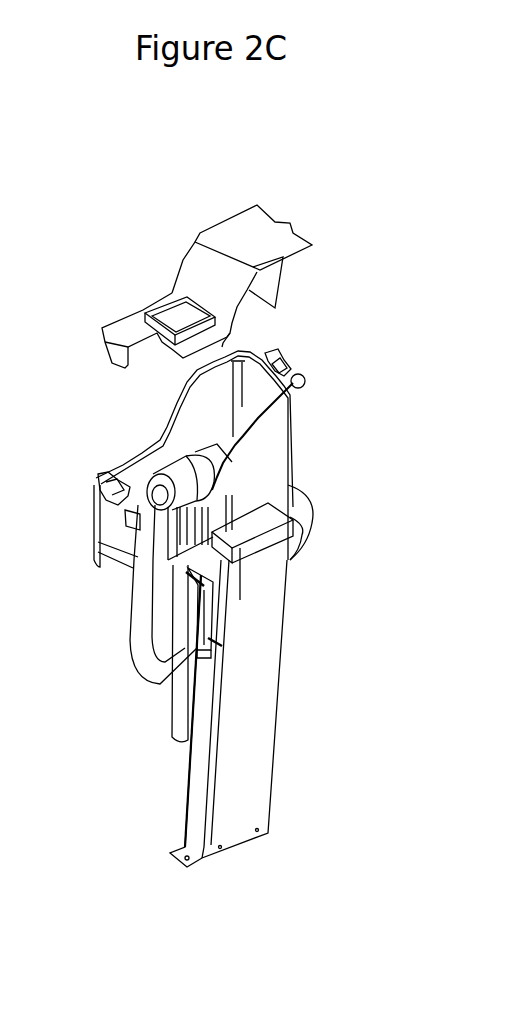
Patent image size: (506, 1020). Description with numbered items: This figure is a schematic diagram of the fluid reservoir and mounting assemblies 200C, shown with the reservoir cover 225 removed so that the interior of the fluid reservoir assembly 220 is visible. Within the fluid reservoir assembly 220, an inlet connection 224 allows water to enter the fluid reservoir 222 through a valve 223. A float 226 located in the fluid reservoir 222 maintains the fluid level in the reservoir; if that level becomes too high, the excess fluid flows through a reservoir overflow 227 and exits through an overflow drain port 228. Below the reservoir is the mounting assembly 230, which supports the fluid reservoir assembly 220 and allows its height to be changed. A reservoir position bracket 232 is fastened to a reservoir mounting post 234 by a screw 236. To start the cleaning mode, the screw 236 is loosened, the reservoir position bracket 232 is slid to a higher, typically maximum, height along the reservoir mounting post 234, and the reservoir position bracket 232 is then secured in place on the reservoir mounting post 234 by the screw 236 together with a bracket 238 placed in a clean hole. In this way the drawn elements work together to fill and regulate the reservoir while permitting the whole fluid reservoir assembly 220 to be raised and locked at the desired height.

The fluid reservoir and mounting assemblies 200C is at (319, 146).
The fluid reservoir assembly 220 is at (296, 198).
The fluid reservoir 222 is at (286, 486).
The valve 223 is at (294, 394).
The inlet connection 224 is at (300, 372).
The reservoir cover 225 is at (310, 240).
The float 226 is at (172, 470).
The reservoir overflow 227 is at (96, 478).
The overflow drain port 228 is at (103, 573).
The mounting assembly 230 is at (317, 838).
The reservoir position bracket 232 is at (226, 660).
The reservoir mounting post 234 is at (275, 747).
The screw 236 is at (214, 586).
The bracket 238 is at (210, 623).